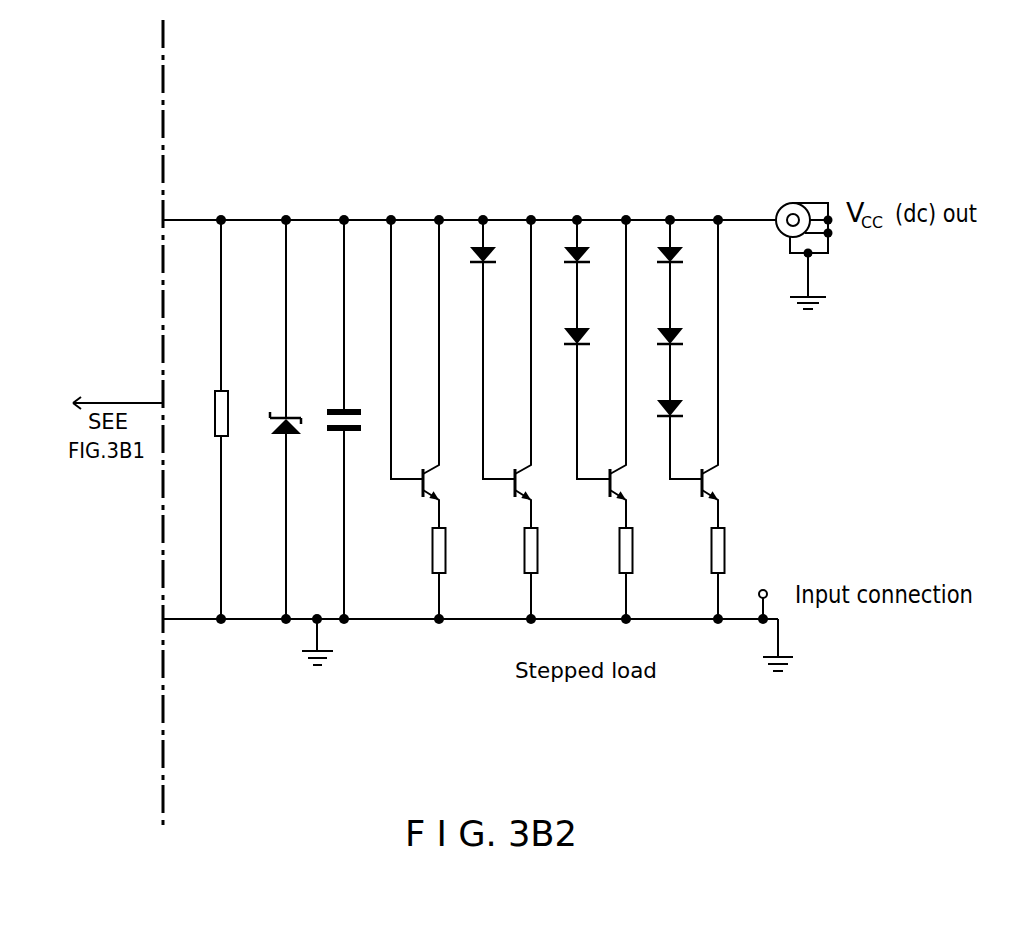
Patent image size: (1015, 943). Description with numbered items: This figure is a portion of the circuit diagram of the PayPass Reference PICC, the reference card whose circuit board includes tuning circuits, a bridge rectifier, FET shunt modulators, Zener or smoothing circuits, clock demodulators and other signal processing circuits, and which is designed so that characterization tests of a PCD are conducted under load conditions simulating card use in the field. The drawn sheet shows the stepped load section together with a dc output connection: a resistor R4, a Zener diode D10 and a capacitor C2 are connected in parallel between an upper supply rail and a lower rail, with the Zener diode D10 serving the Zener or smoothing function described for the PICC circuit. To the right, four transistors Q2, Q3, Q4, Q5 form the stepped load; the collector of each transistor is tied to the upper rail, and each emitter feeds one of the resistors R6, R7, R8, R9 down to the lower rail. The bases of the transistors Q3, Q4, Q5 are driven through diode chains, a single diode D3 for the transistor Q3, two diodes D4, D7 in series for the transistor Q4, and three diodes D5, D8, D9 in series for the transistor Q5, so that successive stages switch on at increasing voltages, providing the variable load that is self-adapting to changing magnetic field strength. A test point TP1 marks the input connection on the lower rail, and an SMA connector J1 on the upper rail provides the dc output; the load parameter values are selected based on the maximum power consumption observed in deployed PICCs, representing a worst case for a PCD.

The resistor R4 is at (204, 419).
The zener diode D10 is at (270, 419).
The capacitor C2 is at (335, 419).
The diode D3 is at (493, 258).
The diode D4 is at (587, 258).
The diode D5 is at (680, 258).
The diode D7 is at (587, 317).
The diode D8 is at (680, 317).
The diode D9 is at (680, 396).
The transistor Q2 of stepped load Q2 is at (421, 437).
The transistor Q3 of stepped load Q3 is at (513, 437).
The transistor Q4 of stepped load Q4 is at (608, 437).
The transistor Q5 of stepped load Q5 is at (701, 437).
The resistor R6 is at (457, 573).
The resistor R7 is at (549, 573).
The resistor R8 is at (643, 573).
The resistor R9 is at (735, 573).
The test point TP1 (input connection) TP1 is at (764, 588).
The SMA connector J1 (VCC dc output) J1 is at (792, 256).